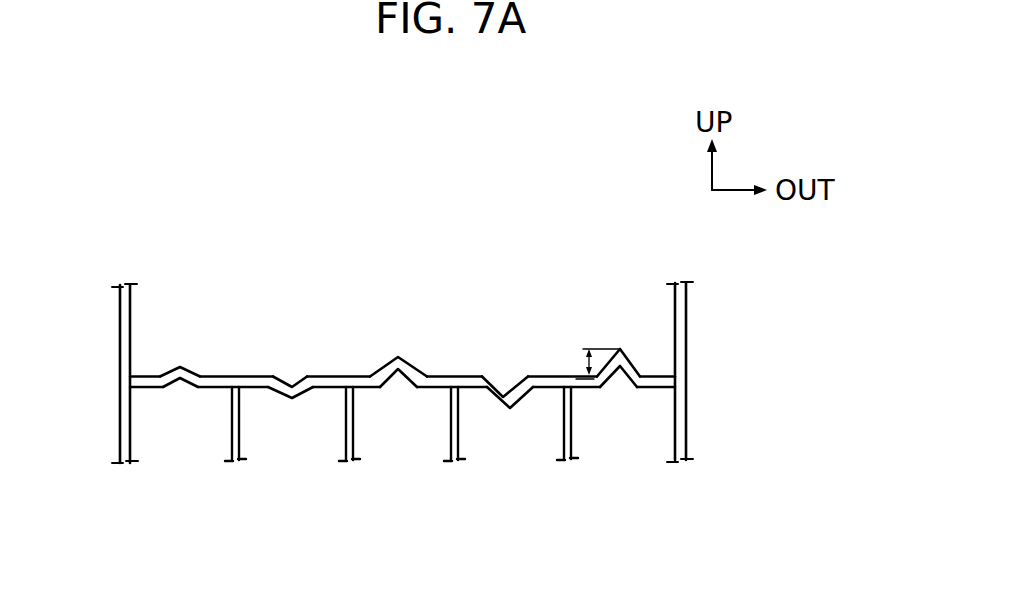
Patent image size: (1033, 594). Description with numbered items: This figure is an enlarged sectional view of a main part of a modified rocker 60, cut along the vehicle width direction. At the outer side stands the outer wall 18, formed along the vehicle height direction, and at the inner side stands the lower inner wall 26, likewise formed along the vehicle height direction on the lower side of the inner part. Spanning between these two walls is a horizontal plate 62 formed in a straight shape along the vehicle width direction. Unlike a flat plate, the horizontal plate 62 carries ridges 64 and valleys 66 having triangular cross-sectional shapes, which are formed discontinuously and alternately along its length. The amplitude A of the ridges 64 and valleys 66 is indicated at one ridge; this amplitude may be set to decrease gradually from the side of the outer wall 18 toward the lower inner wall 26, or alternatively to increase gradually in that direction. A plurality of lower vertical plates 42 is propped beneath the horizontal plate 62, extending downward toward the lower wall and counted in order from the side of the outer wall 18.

The outer wall 18 is at (682, 327).
The lower inner wall 26 is at (122, 342).
The lower vertical plates 42 is at (228, 448).
The rocker 60 is at (421, 374).
The horizontal plate 62 is at (550, 388).
The ridges 64 is at (197, 372).
The valleys 66 is at (285, 389).
The amplitude A is at (586, 366).